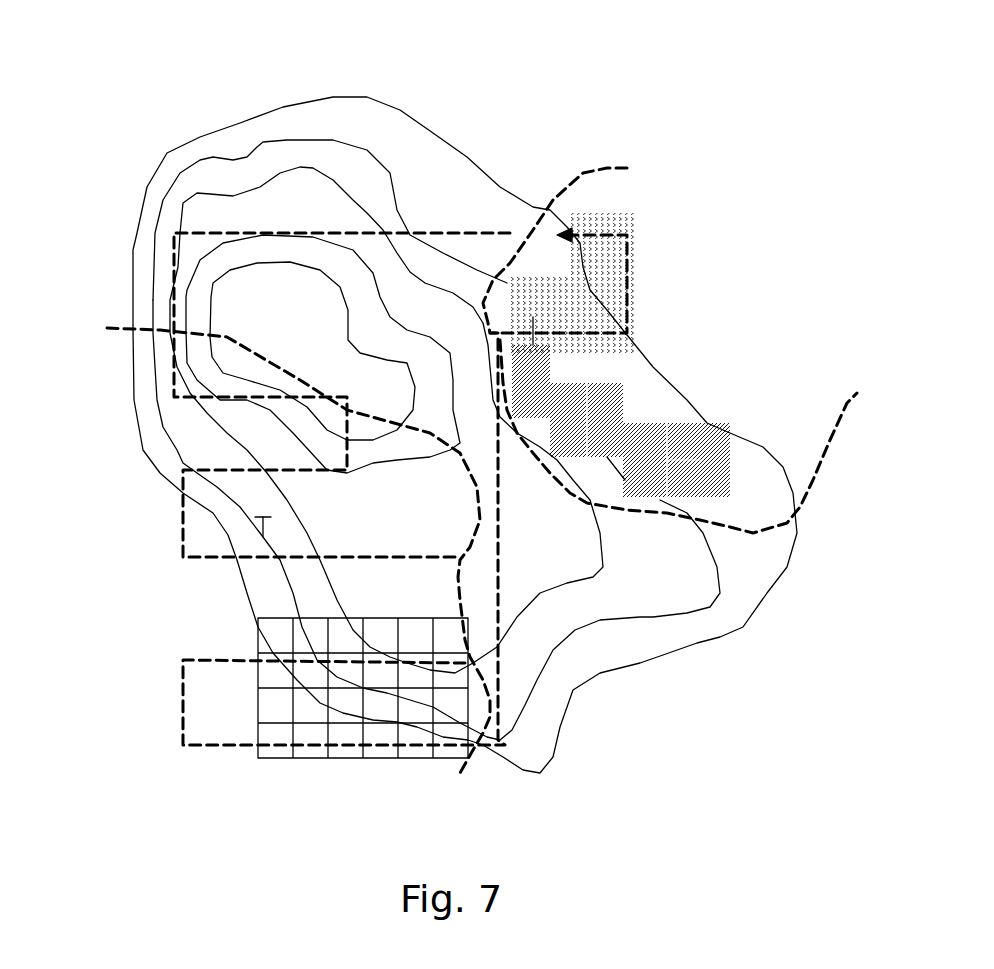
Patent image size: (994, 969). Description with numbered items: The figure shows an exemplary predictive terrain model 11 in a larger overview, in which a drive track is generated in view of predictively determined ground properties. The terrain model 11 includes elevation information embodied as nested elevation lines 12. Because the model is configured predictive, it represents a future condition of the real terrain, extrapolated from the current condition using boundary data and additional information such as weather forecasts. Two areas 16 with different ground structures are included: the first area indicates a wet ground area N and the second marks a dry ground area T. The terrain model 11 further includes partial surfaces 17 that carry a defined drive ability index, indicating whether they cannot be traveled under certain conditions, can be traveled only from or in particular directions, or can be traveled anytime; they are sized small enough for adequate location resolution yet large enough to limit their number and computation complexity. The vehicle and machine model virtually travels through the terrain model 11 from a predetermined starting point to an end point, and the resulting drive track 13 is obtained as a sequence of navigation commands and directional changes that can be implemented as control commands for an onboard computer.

The terrain model 11 is at (465, 402).
The elevation lines 12 is at (436, 374).
The drive track 13 is at (317, 391).
The areas with different ground structures 16 is at (471, 456).
The partial surfaces 17 is at (528, 516).